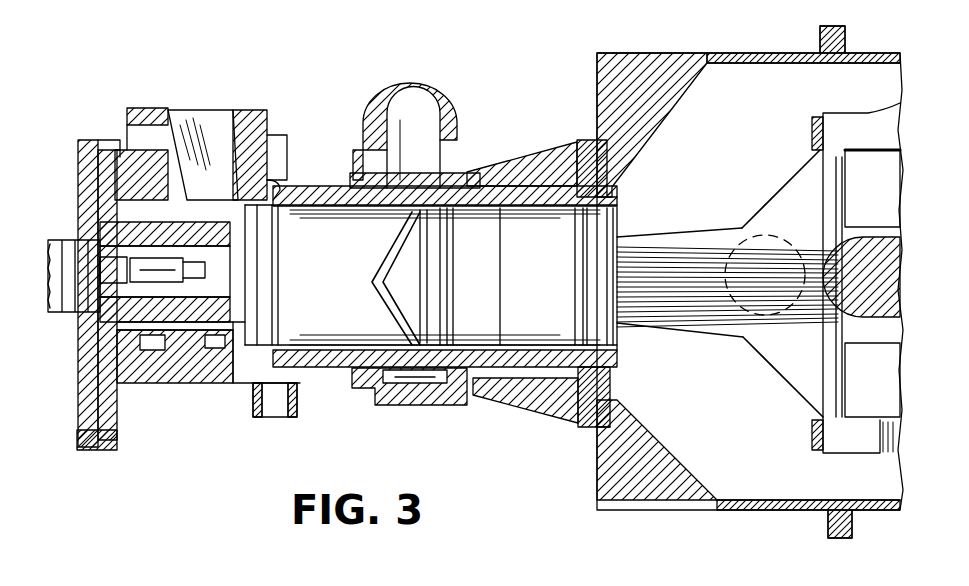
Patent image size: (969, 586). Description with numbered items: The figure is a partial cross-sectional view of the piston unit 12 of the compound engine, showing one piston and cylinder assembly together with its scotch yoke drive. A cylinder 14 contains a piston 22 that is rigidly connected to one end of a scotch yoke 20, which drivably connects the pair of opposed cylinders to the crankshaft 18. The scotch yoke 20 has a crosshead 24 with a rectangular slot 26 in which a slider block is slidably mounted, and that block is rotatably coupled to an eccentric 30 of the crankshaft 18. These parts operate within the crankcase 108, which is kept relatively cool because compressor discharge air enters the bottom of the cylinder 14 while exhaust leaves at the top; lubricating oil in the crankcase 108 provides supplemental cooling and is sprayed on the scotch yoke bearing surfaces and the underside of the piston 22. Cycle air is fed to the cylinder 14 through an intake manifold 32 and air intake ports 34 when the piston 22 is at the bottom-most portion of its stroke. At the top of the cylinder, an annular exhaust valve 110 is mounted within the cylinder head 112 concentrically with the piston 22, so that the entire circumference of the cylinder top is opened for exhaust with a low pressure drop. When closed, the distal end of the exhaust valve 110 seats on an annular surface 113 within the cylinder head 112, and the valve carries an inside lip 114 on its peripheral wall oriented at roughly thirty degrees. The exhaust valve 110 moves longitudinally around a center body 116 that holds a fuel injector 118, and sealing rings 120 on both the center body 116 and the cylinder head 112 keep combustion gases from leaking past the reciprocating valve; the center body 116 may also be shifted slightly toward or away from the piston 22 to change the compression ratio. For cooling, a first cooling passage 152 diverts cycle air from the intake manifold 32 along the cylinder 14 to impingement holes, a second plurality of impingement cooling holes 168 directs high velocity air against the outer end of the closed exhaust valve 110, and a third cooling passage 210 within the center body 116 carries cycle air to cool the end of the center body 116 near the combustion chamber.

The piston unit 12 is at (420, 413).
The cylinder 14 is at (325, 213).
The crankshaft 18 is at (860, 243).
The scotch yoke 20 is at (765, 190).
The piston 22 is at (516, 276).
The crosshead 24 is at (862, 455).
The rectangular slot 26 is at (870, 378).
The eccentric 30 is at (728, 224).
The intake manifold 32 is at (440, 140).
The air intake ports 34 is at (385, 284).
The crankcase 108 is at (722, 510).
The annular exhaust valve 110 is at (161, 200).
The cylinder head 112 is at (193, 383).
The annular surface 113 is at (198, 204).
The inside lip 114 is at (236, 365).
The center body 116 is at (167, 333).
The fuel injector 118 is at (180, 270).
The sealing rings 120 is at (222, 333).
The first cooling passage 152 is at (335, 370).
The second plurality of impingement cooling holes 168 is at (270, 162).
The third cooling passage 210 is at (105, 238).